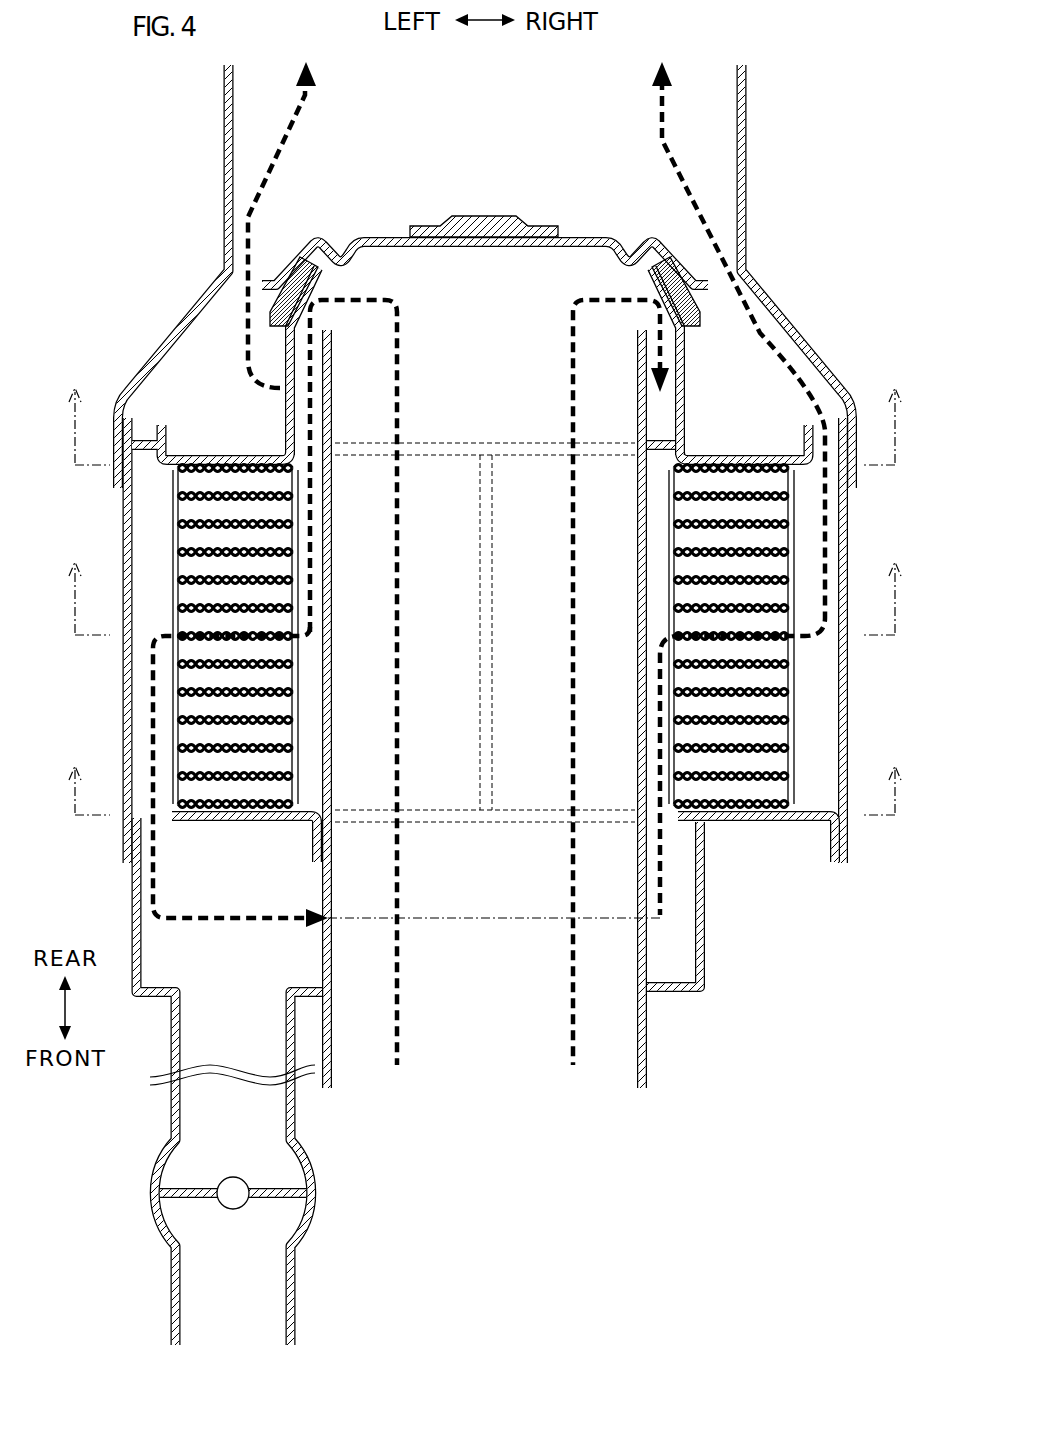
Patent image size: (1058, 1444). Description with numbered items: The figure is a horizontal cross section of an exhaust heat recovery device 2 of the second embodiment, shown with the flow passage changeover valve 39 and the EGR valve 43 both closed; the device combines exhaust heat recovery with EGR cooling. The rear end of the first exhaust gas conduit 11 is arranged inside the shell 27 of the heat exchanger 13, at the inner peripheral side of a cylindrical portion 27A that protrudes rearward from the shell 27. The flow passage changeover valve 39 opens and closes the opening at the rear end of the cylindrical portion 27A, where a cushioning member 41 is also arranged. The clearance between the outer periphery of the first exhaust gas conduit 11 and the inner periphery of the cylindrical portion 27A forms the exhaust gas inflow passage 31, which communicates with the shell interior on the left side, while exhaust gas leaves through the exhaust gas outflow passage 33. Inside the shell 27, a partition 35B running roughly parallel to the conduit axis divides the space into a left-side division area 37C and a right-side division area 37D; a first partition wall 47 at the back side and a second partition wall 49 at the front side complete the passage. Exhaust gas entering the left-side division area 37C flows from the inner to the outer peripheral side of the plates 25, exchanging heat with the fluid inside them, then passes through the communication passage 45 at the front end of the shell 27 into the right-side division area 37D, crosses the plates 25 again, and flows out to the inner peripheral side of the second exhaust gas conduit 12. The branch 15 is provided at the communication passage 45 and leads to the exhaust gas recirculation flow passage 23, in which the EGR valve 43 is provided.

The exhaust heat recovery device 2 is at (186, 208).
The first exhaust gas conduit 11 is at (643, 1053).
The second exhaust gas conduit 12 is at (746, 120).
The heat exchanger 13 is at (852, 497).
The branch 15 is at (172, 1018).
The exhaust gas recirculation flow passage 23 is at (172, 1305).
The plates 25 is at (768, 822).
The shell 27 is at (848, 667).
The cylindrical portion 27A is at (684, 397).
The exhaust gas inflow passage 31 is at (318, 361).
The exhaust gas outflow passage 33 is at (241, 285).
The partition 35B is at (480, 650).
The left-side division area 37C is at (157, 507).
The right-side division area 37D is at (817, 697).
The flow passage changeover valve 39 is at (580, 238).
The cushioning member 41 is at (315, 258).
The EGR valve 43 is at (313, 1191).
The communication passage 45 is at (210, 960).
The first partition wall 47 is at (213, 457).
The second partition wall 49 is at (248, 821).